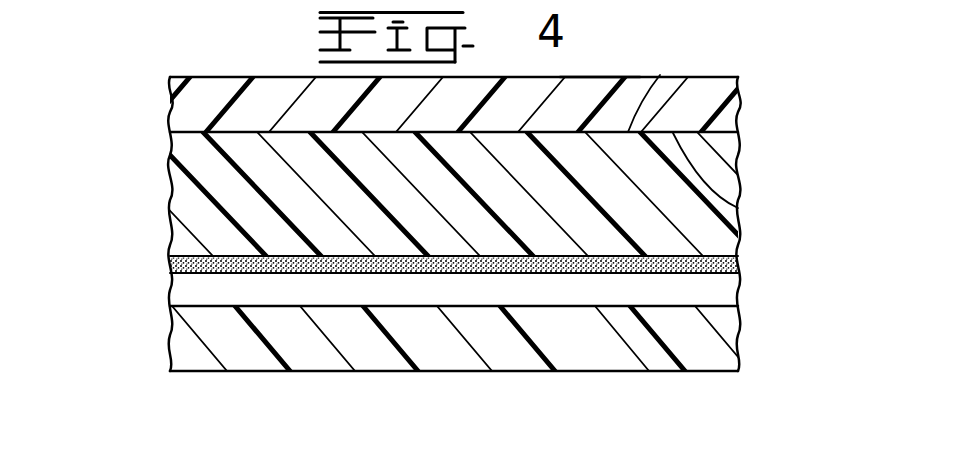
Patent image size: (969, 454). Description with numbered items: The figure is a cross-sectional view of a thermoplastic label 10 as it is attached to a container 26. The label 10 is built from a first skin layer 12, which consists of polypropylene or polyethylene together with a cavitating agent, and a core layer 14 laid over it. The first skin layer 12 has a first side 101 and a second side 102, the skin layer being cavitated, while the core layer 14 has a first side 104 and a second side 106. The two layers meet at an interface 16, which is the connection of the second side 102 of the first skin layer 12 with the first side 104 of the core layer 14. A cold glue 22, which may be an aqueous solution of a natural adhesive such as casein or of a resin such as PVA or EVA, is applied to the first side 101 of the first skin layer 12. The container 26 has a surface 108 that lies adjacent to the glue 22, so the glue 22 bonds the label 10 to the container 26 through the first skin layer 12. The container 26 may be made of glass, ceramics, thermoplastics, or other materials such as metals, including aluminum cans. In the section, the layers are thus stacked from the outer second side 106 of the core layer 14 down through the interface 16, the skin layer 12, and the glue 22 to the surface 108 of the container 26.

The thermoplastic label 10 is at (140, 105).
The first skin layer 12 is at (697, 162).
The core layer 14 is at (713, 88).
The interface 16 is at (170, 113).
The cold glue 22 is at (708, 282).
The container 26 is at (703, 340).
The first side of the first skin layer 101 is at (740, 273).
The second side of the first skin layer 102 is at (736, 207).
The first side of the core layer 104 is at (660, 75).
The second side of the core layer 106 is at (593, 77).
The surface of the container 108 is at (649, 371).